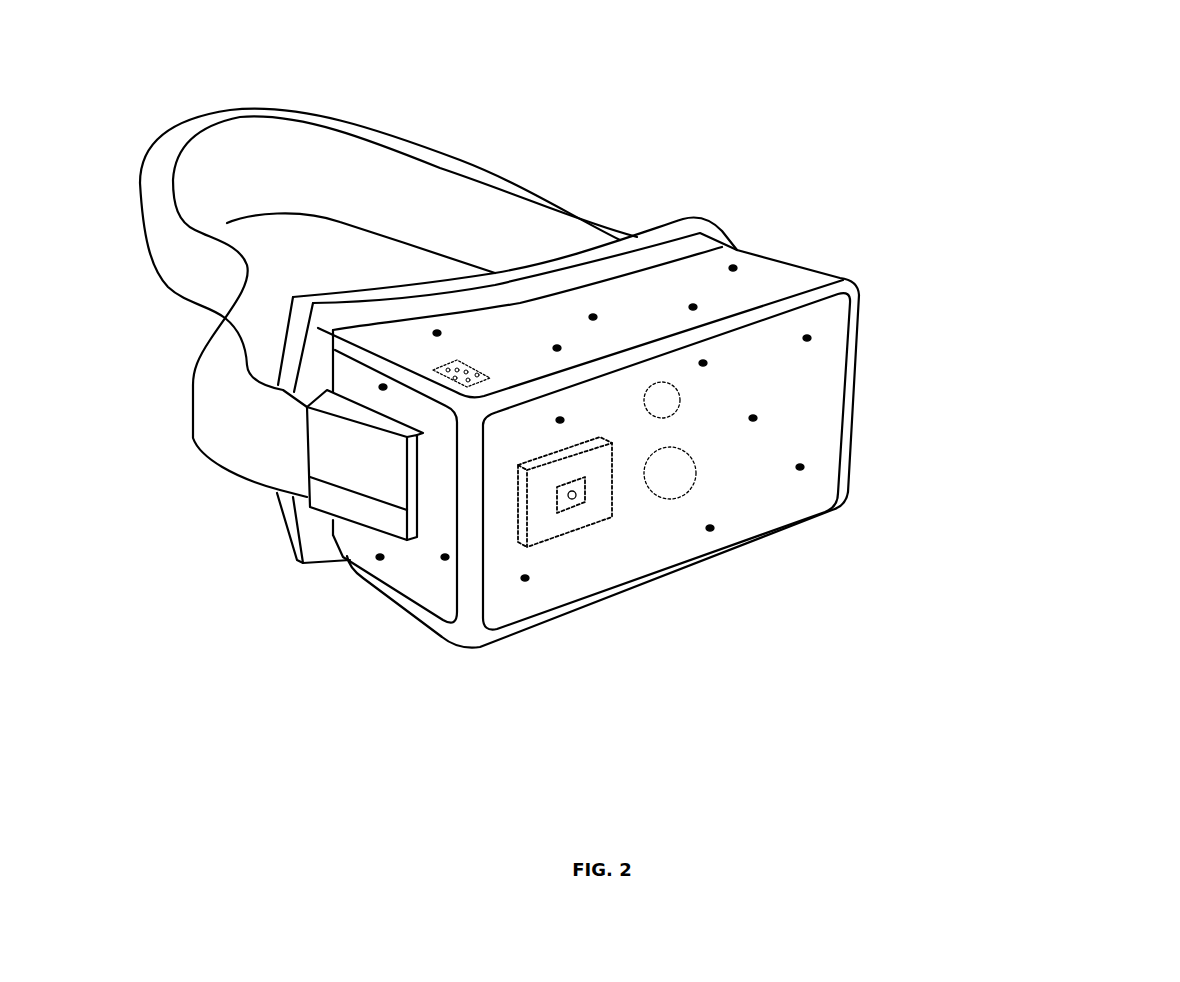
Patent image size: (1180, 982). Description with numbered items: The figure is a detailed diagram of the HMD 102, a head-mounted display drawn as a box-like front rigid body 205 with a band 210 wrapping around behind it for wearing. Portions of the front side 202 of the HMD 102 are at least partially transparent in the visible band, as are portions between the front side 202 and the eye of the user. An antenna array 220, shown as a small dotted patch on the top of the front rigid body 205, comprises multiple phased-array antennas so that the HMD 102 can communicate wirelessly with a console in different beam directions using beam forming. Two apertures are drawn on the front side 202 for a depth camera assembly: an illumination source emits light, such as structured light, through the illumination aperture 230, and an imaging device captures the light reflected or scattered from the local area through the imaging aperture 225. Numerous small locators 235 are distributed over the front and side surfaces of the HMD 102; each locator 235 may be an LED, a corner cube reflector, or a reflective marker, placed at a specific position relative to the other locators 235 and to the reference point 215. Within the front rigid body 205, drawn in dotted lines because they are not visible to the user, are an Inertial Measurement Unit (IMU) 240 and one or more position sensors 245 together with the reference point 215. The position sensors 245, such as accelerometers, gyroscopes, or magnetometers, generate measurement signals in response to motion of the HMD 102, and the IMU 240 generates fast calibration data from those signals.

The HMD 102 is at (943, 103).
The front side 202 is at (768, 447).
The front rigid body 205 is at (716, 408).
The band 210 is at (510, 178).
The reference point 215 is at (575, 498).
The antenna array 220 is at (455, 378).
The imaging aperture 225 is at (697, 473).
The illumination aperture 230 is at (679, 387).
The locators 235 is at (378, 556).
The Inertial Measurement Unit (IMU) 240 is at (687, 612).
The position sensors 245 is at (557, 513).